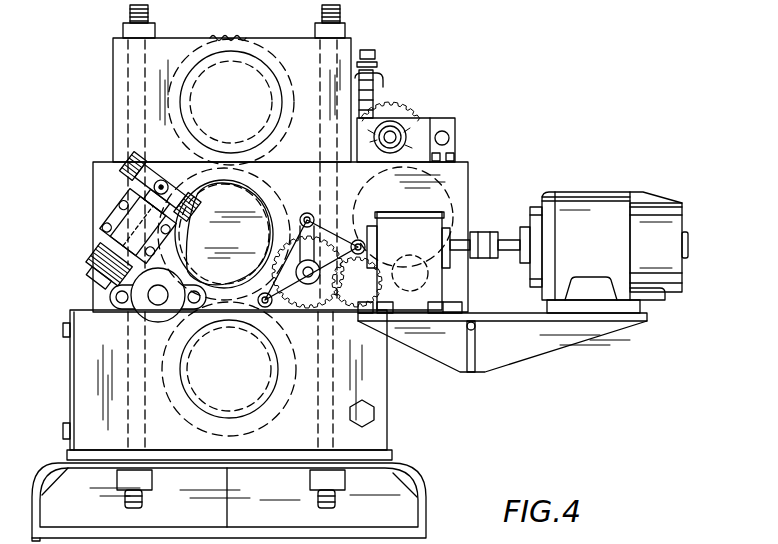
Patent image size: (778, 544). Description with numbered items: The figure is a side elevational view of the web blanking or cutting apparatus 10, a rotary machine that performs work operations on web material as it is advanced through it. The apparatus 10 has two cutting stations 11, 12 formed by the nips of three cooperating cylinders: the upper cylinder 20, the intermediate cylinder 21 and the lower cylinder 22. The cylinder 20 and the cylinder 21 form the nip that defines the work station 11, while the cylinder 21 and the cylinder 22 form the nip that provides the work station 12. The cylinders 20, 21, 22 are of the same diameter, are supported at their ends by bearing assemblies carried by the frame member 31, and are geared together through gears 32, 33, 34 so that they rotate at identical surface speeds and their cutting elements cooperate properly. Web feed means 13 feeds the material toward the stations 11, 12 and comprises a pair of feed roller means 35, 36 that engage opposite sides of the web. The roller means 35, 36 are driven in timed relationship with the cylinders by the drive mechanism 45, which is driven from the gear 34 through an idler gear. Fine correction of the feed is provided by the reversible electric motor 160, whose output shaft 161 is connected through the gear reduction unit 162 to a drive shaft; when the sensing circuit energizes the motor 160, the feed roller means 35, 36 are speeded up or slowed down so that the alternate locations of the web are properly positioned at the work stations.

The web blanking or cutting apparatus 10 is at (483, 152).
The cutting station 11 is at (285, 156).
The cutting station 12 is at (158, 306).
The web feed means 13 is at (424, 102).
The upper cylinder 20 is at (270, 38).
The intermediate cylinder 21 is at (280, 194).
The lower cylinder 22 is at (258, 426).
The frame member 31 is at (100, 181).
The gear 32 is at (226, 37).
The gear 33 is at (231, 102).
The gear 34 is at (175, 414).
The feed roller means 35 is at (455, 117).
The feed roller means 36 is at (478, 176).
The drive mechanism 45 is at (291, 320).
The reversible electric motor 160 is at (598, 192).
The output shaft 161 is at (516, 218).
The gear reduction unit 162 is at (411, 293).